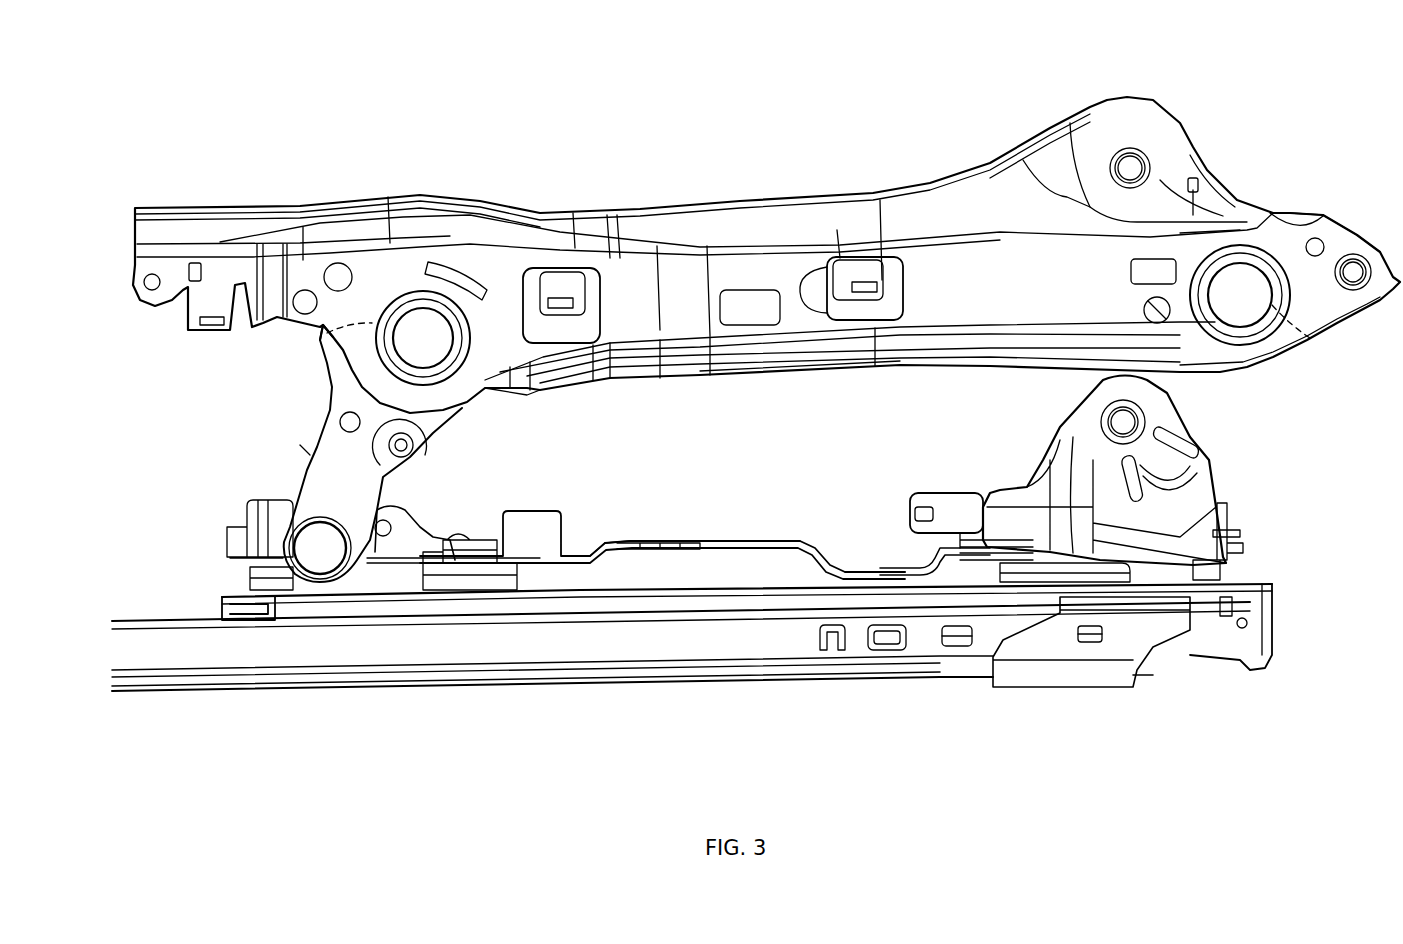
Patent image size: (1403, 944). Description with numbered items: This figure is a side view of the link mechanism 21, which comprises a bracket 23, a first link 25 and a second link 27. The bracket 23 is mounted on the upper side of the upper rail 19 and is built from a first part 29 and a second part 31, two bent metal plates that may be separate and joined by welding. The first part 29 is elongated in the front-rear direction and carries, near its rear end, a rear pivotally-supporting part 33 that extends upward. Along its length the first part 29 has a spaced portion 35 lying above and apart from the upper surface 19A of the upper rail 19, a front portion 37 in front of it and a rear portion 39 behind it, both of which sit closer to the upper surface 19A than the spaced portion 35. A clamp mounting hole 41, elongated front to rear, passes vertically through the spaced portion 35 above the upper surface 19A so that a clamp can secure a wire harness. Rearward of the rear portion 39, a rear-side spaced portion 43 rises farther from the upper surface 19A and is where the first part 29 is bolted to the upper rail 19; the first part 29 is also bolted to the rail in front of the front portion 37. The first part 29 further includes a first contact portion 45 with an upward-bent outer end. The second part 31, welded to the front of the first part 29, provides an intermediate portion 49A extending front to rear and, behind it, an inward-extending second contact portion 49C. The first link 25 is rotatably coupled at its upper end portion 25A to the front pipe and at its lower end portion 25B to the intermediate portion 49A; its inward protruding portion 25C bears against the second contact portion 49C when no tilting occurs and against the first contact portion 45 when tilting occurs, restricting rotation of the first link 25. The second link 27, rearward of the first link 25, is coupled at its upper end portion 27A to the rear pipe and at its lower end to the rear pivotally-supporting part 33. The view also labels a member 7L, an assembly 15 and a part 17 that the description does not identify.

The left side frame of seat back 7L is at (766, 260).
The slide rail 15 is at (741, 693).
The lower rail 17 is at (660, 644).
The upper rail 19 is at (668, 612).
The upper surface 19A is at (690, 585).
The link mechanism 21 is at (302, 447).
The bracket 23 is at (797, 540).
The first link 25 is at (330, 482).
The upper end portion 25A is at (320, 342).
The lower end portion 25B is at (320, 556).
The protruding portion 25C is at (422, 456).
The second link 27 is at (1180, 400).
The upper end portion 27A is at (1300, 345).
The first part 29 is at (617, 540).
The second part 31 is at (395, 545).
The rear pivotally-supporting part 33 is at (955, 498).
The spaced portion 35 is at (745, 542).
The front portion 37 is at (574, 548).
The rear portion 39 is at (868, 570).
The clamp mounting hole 41 is at (662, 542).
The rear-side spaced portion 43 is at (968, 530).
The first contact portion 45 is at (473, 550).
The intermediate portion 49A is at (375, 557).
The second contact portion 49C is at (407, 543).